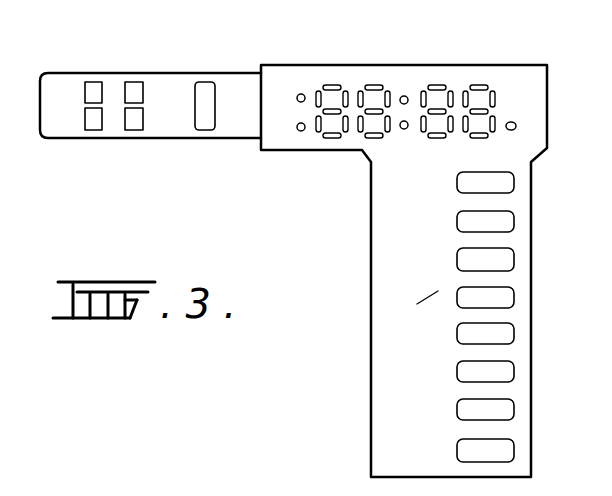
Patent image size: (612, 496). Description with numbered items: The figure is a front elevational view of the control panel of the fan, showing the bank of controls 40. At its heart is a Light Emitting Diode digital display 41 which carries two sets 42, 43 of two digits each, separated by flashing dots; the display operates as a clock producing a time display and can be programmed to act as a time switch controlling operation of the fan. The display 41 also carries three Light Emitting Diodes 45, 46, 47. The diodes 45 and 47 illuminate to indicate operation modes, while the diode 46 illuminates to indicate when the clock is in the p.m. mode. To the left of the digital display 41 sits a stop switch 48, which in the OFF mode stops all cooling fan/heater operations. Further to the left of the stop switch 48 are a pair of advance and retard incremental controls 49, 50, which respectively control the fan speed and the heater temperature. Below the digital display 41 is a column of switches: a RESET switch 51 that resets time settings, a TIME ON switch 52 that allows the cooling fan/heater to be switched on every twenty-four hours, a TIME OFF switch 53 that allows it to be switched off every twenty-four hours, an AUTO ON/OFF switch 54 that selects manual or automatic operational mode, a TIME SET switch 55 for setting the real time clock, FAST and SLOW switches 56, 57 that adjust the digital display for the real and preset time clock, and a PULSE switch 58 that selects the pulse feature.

The bank of controls 40 is at (496, 60).
The L.E.D. digital display 41 is at (521, 82).
The set of two digits 42 is at (331, 95).
The set of two digits 43 is at (456, 96).
The Light Emitting Diode 45 is at (297, 98).
The Light Emitting Diode 46 is at (298, 131).
The Light Emitting Diode 47 is at (516, 126).
The stop switch 48 is at (203, 88).
The advance and retard incremental control 49 is at (92, 93).
The advance and retard incremental control 50 is at (131, 92).
The RESET switch 51 is at (505, 182).
The TIME ON switch 52 is at (503, 222).
The TIME OFF switch 53 is at (503, 260).
The AUTO ON/OFF switch 54 is at (503, 298).
The TIME SET switch 55 is at (503, 335).
The FAST switch 56 is at (503, 372).
The SLOW switch 57 is at (503, 412).
The PULSE switch 58 is at (503, 452).